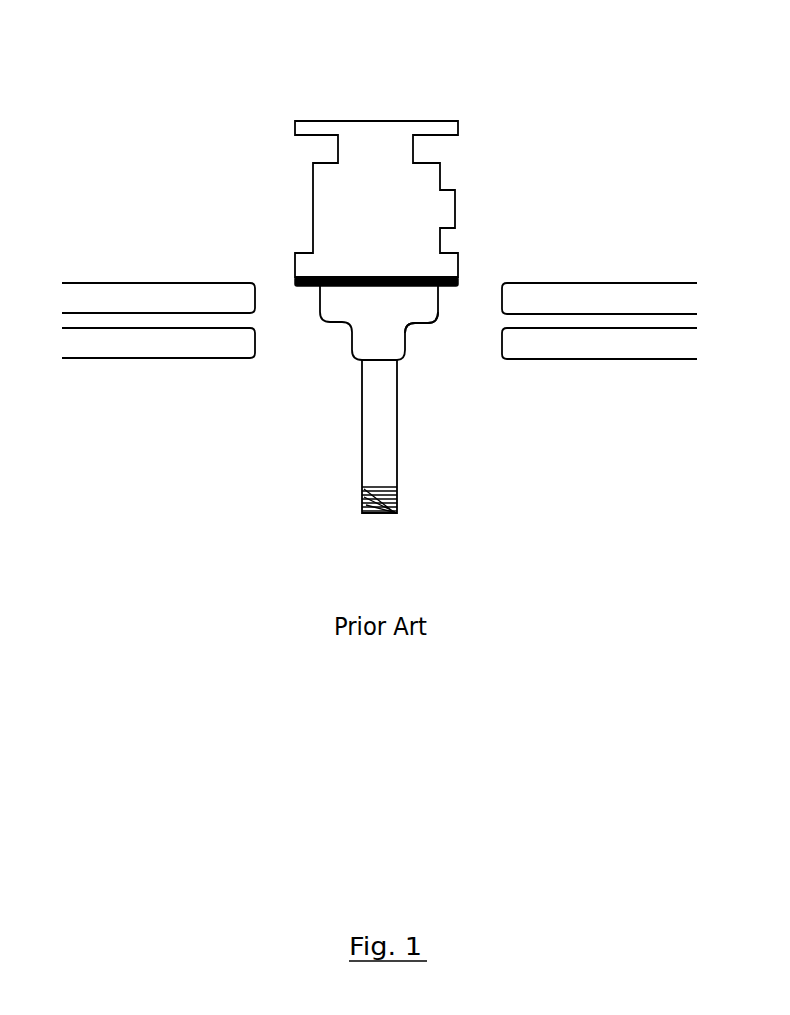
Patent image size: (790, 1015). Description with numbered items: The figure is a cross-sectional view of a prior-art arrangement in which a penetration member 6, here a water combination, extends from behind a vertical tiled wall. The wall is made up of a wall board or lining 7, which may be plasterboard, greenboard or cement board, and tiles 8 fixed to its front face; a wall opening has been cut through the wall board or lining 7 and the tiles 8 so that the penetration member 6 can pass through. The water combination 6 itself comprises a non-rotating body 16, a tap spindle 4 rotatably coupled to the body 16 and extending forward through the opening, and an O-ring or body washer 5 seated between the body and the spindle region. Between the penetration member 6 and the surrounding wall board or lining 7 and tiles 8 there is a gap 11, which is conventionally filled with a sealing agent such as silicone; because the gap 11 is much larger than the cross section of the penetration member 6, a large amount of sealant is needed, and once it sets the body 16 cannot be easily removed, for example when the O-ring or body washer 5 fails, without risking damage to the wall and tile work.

The tap spindle 4 is at (368, 452).
The O-ring or body washer 5 is at (293, 278).
The penetration member 6 is at (383, 125).
The wall board or lining 7 is at (193, 288).
The tile 8 is at (128, 353).
The gap 11 is at (280, 337).
The non-rotating body 16 is at (415, 332).